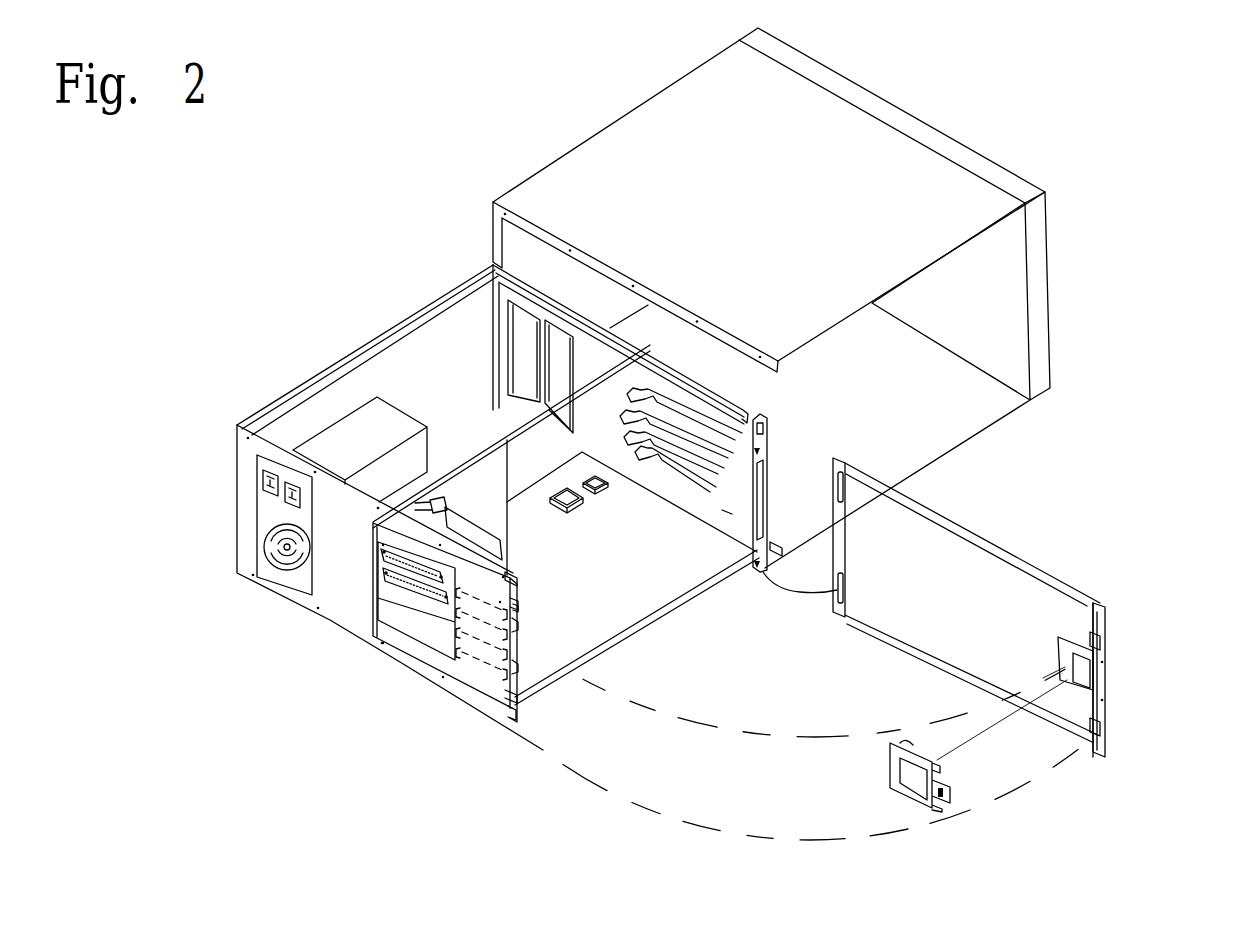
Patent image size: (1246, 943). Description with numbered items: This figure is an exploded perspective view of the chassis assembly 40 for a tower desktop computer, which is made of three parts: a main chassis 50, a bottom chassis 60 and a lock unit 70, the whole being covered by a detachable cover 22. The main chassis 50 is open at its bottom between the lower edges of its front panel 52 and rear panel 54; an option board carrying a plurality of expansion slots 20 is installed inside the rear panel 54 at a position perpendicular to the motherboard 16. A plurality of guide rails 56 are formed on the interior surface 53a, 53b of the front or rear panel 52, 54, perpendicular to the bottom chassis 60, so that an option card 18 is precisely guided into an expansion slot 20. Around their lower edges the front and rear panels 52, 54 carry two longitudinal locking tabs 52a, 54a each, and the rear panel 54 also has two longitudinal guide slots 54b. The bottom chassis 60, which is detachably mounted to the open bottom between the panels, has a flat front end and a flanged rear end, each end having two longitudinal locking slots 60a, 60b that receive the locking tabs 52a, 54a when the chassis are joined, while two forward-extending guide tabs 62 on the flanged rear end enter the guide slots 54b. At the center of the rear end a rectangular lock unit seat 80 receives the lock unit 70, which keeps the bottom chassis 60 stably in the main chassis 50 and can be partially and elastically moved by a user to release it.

The motherboard 16 is at (580, 640).
The option card 18 is at (474, 530).
The expansion slot 20 is at (373, 523).
The cover 22 is at (603, 148).
The chassis assembly 40 is at (337, 215).
The main chassis 50 is at (416, 304).
The front panel 52 is at (697, 503).
The locking tab 52a is at (768, 447).
The interior surface 53a is at (726, 516).
The interior surface 53b is at (524, 608).
The rear panel 54 is at (477, 683).
The locking tab 54a is at (520, 602).
The guide slot 54b is at (505, 572).
The guide rail 56 is at (640, 398).
The bottom chassis 60 is at (973, 510).
The locking slot 60a is at (848, 492).
The locking slot 60b is at (1105, 648).
The guide tab 62 is at (1090, 633).
The lock unit 70 is at (906, 815).
The lock unit seat 80 is at (1044, 640).